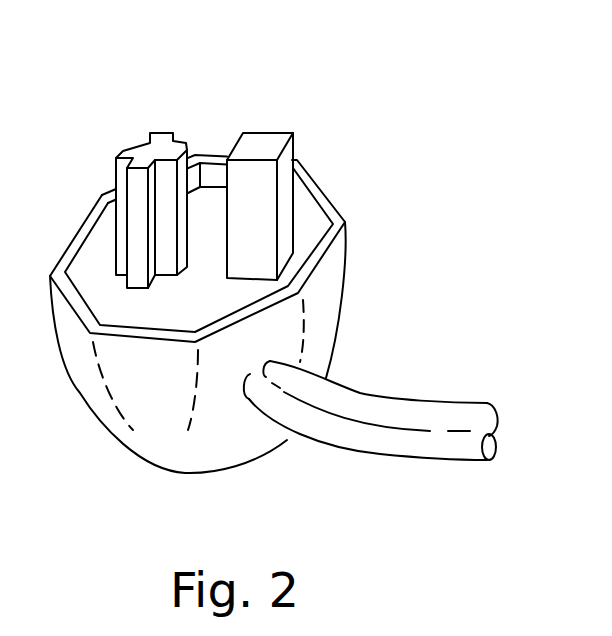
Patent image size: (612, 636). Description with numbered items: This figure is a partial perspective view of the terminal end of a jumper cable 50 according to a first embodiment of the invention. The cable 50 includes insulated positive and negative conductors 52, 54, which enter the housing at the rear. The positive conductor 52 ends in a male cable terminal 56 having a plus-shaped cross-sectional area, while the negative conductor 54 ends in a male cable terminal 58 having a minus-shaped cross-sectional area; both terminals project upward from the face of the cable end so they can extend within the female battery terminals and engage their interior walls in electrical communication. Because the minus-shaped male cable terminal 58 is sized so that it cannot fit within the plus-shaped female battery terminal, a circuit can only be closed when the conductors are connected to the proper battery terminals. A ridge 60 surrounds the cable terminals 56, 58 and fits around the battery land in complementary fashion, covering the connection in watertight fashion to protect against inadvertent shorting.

The jumper cable 50 is at (381, 56).
The positive conductor 52 is at (378, 445).
The negative conductor 54 is at (435, 413).
The male cable terminal 56 is at (136, 141).
The male cable terminal 58 is at (265, 132).
The ridge 60 is at (318, 190).